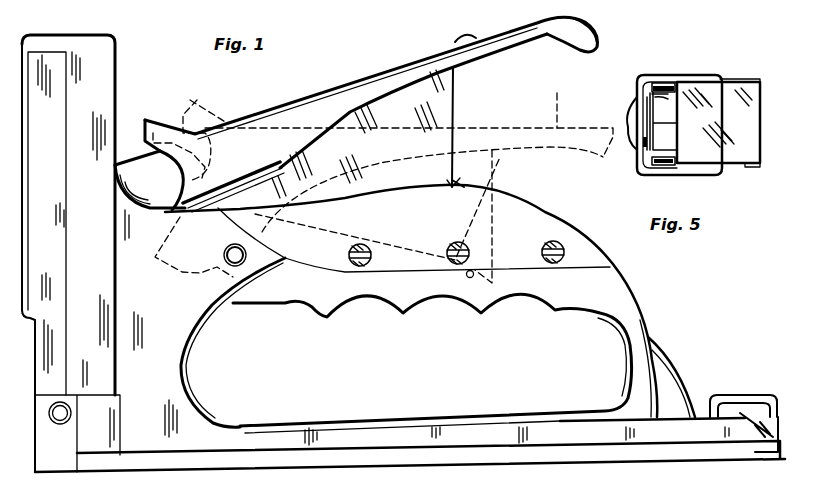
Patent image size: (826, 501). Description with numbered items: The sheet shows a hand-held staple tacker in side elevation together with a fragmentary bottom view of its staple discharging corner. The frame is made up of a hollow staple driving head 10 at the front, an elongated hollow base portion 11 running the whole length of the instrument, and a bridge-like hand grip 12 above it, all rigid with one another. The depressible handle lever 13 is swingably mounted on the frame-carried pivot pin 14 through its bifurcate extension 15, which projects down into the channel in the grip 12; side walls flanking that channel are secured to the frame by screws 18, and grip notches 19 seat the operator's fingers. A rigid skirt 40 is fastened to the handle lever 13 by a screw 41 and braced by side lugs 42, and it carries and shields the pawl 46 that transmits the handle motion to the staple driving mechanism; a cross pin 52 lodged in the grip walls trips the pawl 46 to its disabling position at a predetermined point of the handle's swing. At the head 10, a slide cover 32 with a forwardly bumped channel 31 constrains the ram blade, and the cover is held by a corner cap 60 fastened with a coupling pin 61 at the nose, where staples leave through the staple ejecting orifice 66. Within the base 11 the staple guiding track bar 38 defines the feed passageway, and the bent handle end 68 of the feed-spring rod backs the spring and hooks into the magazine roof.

In FIG. 1, the staple driving head 10 is at (99, 253).
In FIG. 5, the staple driving head 10 is at (698, 75).
In FIG. 1, the base portion 11 is at (393, 433).
In FIG. 5, the base portion 11 is at (725, 93).
In FIG. 1, the hand grip 12 is at (236, 497).
In FIG. 1, the handle lever 13 is at (553, 35).
In FIG. 1, the pivot pin 14 is at (227, 257).
In FIG. 1, the bifurcate extension 15 is at (253, 200).
In FIG. 1, the screws 18 is at (347, 250).
In FIG. 1, the grip notches 19 is at (437, 300).
In FIG. 1, the channel 31 is at (27, 50).
In FIG. 1, the slide cover 32 is at (47, 223).
In FIG. 5, the slide cover 32 is at (647, 73).
In FIG. 1, the track bar 38 is at (765, 428).
In FIG. 1, the skirt 40 is at (455, 100).
In FIG. 1, the screw 41 is at (467, 40).
In FIG. 1, the side lugs 42 is at (133, 157).
In FIG. 1, the pawl 46 is at (457, 183).
In FIG. 1, the cross pin 52 is at (473, 283).
In FIG. 5, the corner cap 60 is at (652, 95).
In FIG. 1, the coupling pin 61 is at (50, 417).
In FIG. 5, the coupling pin 61 is at (664, 80).
In FIG. 5, the staple ejecting orifice 66 is at (645, 147).
In FIG. 1, the bent handle end 68 is at (757, 397).